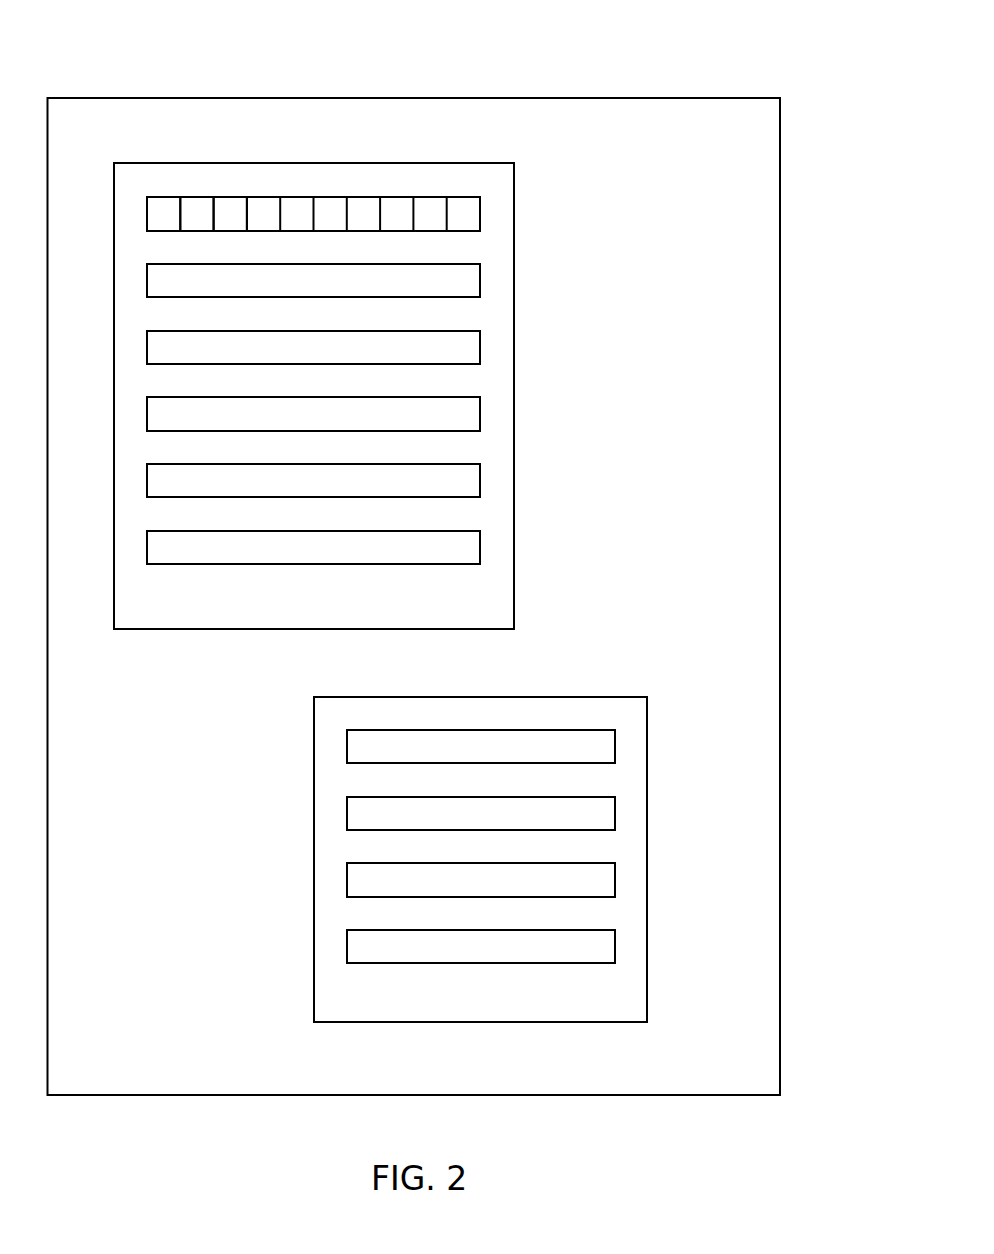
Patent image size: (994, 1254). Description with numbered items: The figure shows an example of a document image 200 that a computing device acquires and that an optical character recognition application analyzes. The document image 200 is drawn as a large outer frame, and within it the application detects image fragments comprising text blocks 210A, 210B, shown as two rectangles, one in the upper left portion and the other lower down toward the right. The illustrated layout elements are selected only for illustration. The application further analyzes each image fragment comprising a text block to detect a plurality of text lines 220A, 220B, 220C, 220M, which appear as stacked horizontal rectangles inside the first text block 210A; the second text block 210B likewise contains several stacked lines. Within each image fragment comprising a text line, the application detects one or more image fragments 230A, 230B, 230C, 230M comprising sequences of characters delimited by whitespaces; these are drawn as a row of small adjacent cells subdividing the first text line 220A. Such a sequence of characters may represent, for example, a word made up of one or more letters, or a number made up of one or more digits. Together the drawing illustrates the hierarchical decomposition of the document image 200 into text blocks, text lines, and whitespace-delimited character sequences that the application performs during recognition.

The document image 200 is at (755, 48).
The text block 210A is at (521, 163).
The text block 210B is at (655, 682).
The text line 220A is at (497, 214).
The text line 220B is at (497, 281).
The text line 220C is at (497, 347).
The text line 220M is at (497, 547).
The image fragment comprising a sequence of characters 230A is at (165, 215).
The image fragment comprising a sequence of characters 230B is at (198, 215).
The image fragment comprising a sequence of characters 230C is at (231, 215).
The image fragment comprising a sequence of characters 230M is at (464, 213).